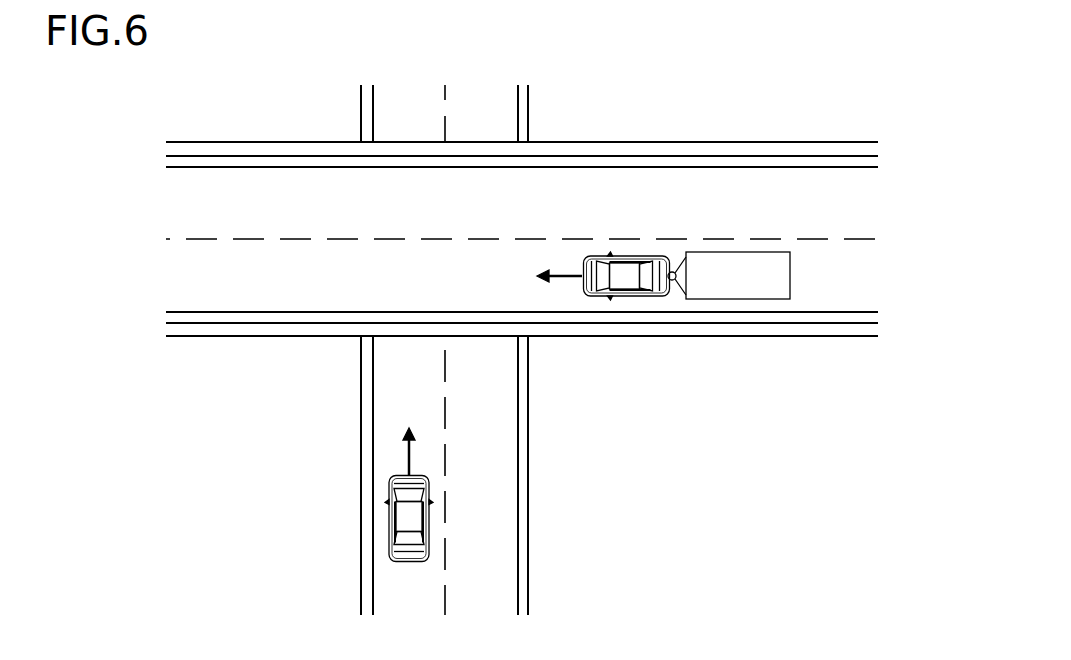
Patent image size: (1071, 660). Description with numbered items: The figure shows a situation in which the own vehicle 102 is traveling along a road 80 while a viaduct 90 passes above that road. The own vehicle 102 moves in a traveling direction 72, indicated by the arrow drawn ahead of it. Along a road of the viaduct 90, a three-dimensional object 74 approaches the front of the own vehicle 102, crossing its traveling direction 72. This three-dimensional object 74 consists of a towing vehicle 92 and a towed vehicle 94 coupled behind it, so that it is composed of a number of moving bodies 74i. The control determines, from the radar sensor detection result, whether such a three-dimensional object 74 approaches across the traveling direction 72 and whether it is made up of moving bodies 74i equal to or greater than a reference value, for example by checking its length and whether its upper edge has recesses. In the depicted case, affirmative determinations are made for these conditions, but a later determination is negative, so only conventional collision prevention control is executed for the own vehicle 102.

The viaduct 90 is at (238, 142).
The road 80 is at (387, 387).
The towing vehicle 92 is at (633, 256).
The three-dimensional object 74 is at (783, 252).
The towed vehicle 94 is at (732, 256).
The moving bodies 74i is at (629, 296).
The own vehicle 102 is at (388, 512).
The traveling direction 72 is at (410, 455).